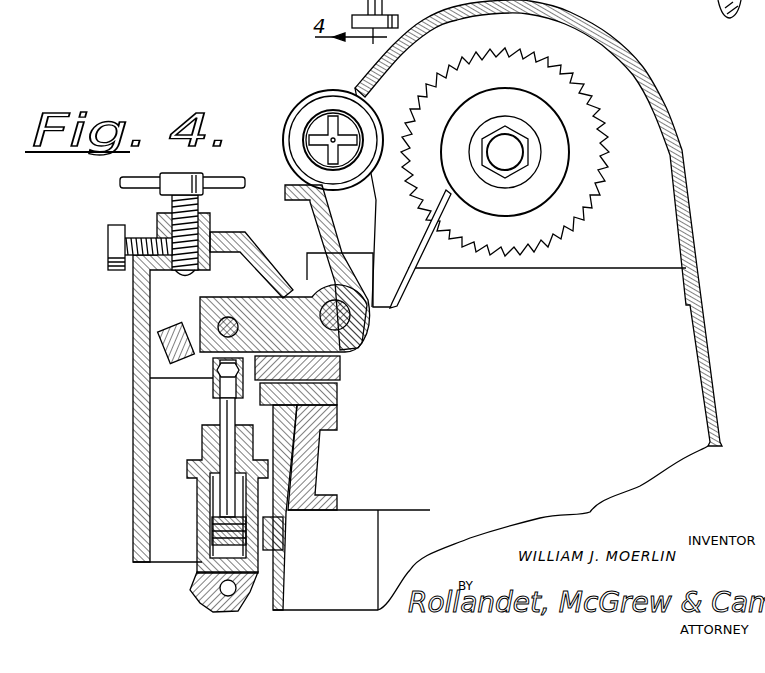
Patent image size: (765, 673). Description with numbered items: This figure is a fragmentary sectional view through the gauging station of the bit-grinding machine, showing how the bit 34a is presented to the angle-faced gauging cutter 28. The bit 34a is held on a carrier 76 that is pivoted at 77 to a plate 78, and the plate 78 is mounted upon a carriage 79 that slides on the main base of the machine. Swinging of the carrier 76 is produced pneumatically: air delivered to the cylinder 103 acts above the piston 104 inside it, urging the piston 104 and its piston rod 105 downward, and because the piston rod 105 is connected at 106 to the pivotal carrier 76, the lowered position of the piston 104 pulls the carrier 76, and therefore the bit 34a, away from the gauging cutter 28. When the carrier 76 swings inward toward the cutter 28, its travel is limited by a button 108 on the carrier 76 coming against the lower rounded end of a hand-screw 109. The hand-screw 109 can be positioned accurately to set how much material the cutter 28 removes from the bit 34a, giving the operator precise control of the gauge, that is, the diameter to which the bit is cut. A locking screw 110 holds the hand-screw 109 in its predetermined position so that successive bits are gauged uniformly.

The angle-faced gauging cutter 28 is at (592, 185).
The bit 34a is at (323, 123).
The carrier 76 is at (376, 232).
The pivot 77 is at (345, 352).
The plate 78 is at (341, 380).
The carriage 79 is at (290, 465).
The cylinder 103 is at (212, 500).
The piston 104 is at (218, 530).
The piston rod 105 is at (220, 410).
The connection 106 is at (218, 325).
The button 108 is at (170, 327).
The hand-screw 109 is at (188, 275).
The locking screw 110 is at (112, 241).